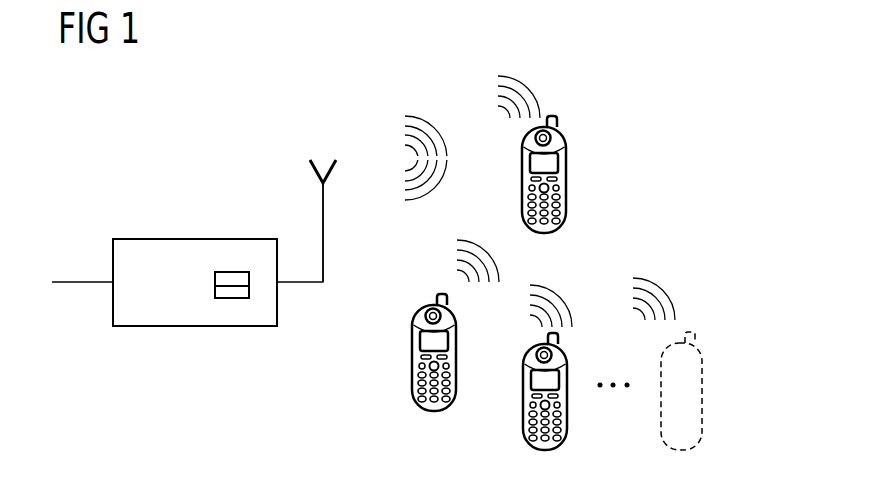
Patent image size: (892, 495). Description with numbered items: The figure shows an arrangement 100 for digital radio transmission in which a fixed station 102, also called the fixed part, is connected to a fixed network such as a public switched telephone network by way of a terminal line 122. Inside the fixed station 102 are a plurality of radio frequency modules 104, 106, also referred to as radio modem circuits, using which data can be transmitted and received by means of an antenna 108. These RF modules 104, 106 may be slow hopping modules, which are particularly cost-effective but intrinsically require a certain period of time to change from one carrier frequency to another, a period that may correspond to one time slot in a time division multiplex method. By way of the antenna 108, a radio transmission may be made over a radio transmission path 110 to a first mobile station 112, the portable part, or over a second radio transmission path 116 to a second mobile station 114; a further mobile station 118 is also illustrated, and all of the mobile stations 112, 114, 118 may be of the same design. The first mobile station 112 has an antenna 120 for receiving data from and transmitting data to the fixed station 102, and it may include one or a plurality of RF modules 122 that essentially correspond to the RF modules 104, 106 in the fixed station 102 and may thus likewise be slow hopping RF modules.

The arrangement for digital radio transmission 100 is at (720, 79).
The fixed station 102 is at (196, 239).
The radio frequency module 104 is at (214, 279).
The radio frequency module 106 is at (214, 290).
The antenna 108 is at (328, 161).
The radio transmission path 110 is at (410, 117).
The first mobile station 112 is at (567, 171).
The second mobile station 114 is at (566, 413).
The second radio transmission path 116 is at (566, 288).
The mobile station 118 is at (412, 358).
The antenna 120 is at (558, 121).
The terminal line / RF module 122 is at (89, 281).